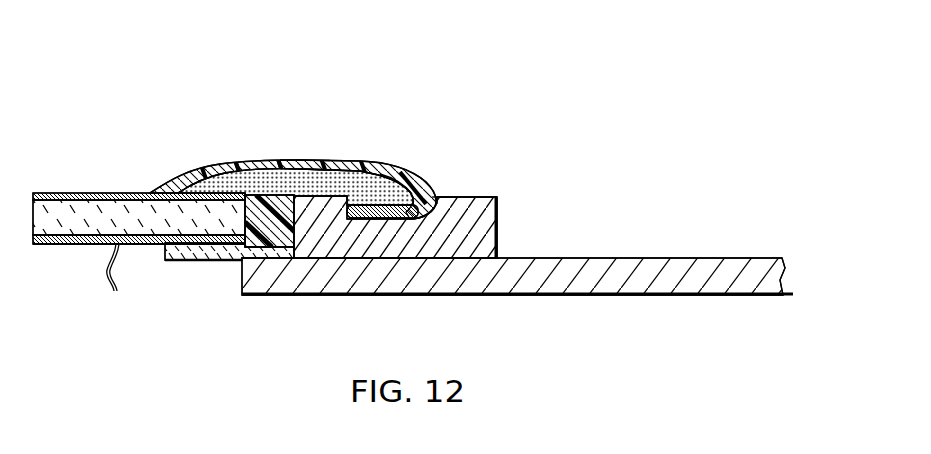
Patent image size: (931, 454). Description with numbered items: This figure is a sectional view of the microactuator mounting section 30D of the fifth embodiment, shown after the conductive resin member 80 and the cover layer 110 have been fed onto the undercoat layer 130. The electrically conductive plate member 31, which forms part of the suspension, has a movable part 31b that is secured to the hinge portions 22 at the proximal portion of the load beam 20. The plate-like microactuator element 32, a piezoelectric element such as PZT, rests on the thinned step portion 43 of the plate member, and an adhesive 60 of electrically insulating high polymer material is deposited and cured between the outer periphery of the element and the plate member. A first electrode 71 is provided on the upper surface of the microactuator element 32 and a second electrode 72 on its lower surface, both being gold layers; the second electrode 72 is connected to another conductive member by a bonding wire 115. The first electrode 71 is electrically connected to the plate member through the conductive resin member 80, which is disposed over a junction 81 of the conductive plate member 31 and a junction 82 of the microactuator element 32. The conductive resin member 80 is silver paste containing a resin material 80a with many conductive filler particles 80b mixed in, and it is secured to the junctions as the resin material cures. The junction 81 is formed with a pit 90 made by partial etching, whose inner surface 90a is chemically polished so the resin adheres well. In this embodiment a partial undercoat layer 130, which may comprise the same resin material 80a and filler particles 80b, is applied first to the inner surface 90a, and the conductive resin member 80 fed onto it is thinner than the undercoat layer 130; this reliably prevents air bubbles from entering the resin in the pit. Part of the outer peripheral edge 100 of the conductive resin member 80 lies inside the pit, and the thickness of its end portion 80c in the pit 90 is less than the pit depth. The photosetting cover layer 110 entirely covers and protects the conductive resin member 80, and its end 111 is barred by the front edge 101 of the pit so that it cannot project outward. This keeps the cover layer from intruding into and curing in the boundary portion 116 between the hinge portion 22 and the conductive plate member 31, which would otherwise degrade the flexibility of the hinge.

The microactuator mounting section 30D is at (116, 68).
The load beam 20 is at (675, 272).
The hinge portions 22 is at (523, 298).
The conductive plate member 31 is at (484, 197).
The movable part 31b is at (382, 260).
The microactuator element 32 is at (97, 217).
The step portion 43 is at (200, 261).
The adhesive 60 is at (266, 228).
The first electrode 71 is at (41, 193).
The second electrode 72 is at (53, 246).
The conductive resin member 80 is at (308, 145).
The resin material 80a is at (222, 173).
The conductive filler particles 80b is at (292, 170).
The end portion 80c is at (407, 183).
The junction 81 is at (319, 166).
The junction 82 is at (193, 183).
The pit 90 is at (370, 205).
The inner surface 90a is at (347, 218).
The outer peripheral edge 100 is at (455, 197).
The front edge 101 is at (438, 197).
The cover layer 110 is at (307, 160).
The end 111 is at (432, 205).
The bonding wire 115 is at (98, 277).
The boundary portion 116 is at (508, 252).
The undercoat layer 130 is at (396, 178).